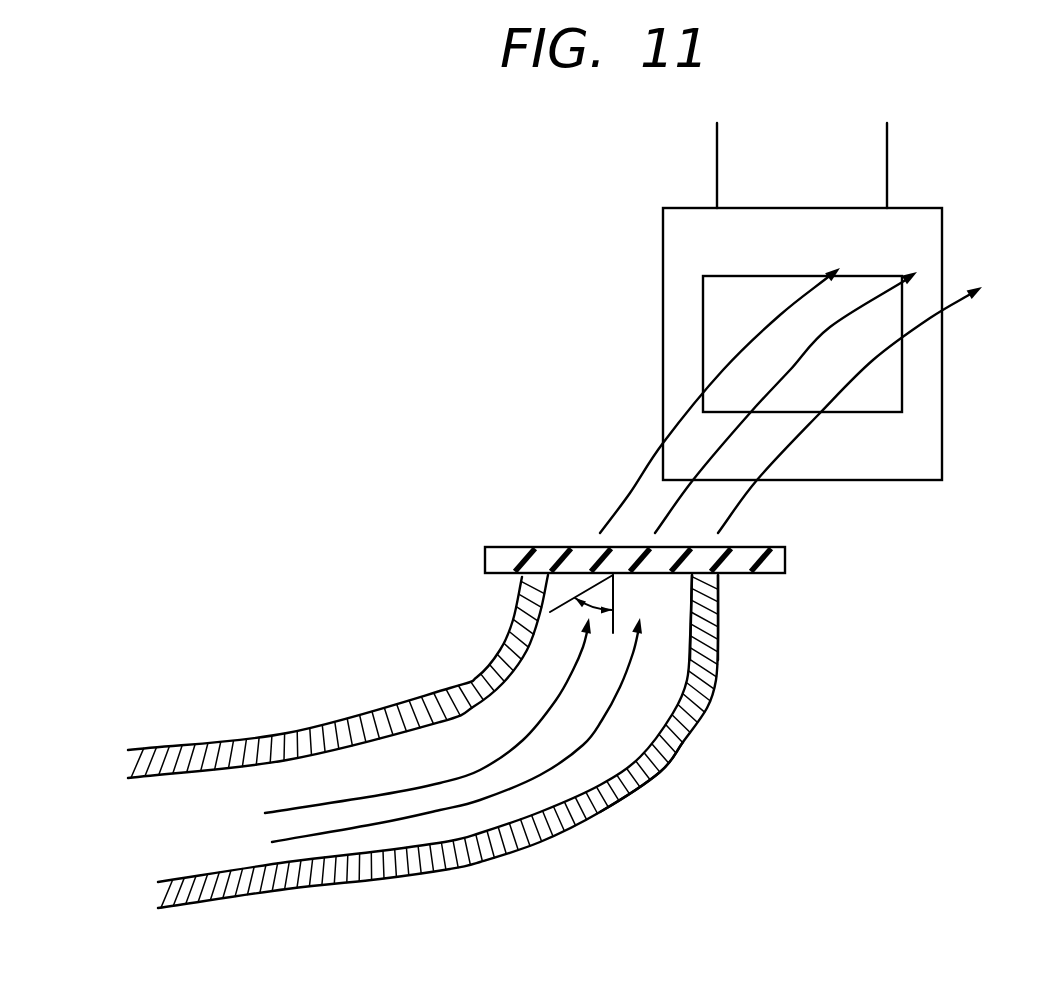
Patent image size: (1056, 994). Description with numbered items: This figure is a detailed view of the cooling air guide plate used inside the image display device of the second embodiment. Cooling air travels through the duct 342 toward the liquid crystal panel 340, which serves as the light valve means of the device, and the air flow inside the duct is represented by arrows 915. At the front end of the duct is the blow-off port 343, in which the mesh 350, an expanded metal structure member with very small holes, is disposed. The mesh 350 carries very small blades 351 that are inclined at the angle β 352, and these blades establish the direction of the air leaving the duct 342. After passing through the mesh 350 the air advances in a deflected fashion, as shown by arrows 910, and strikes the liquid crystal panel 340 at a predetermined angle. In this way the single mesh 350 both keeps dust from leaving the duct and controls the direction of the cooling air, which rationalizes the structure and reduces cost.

The liquid crystal panel 340 is at (910, 450).
The arrows 910 is at (730, 362).
The mesh 350 is at (745, 557).
The very small blades 351 is at (558, 562).
The duct 342 is at (695, 685).
The blow-off port 343 is at (720, 593).
The angle β 352 is at (648, 766).
The arrows 915 is at (477, 800).